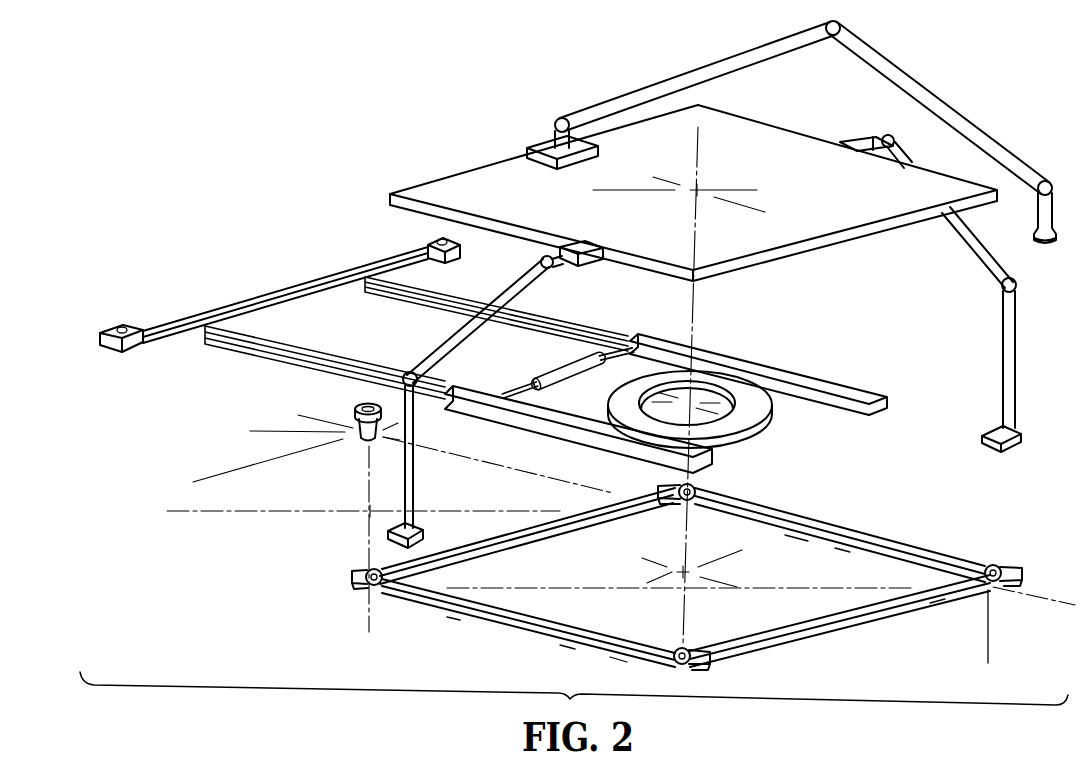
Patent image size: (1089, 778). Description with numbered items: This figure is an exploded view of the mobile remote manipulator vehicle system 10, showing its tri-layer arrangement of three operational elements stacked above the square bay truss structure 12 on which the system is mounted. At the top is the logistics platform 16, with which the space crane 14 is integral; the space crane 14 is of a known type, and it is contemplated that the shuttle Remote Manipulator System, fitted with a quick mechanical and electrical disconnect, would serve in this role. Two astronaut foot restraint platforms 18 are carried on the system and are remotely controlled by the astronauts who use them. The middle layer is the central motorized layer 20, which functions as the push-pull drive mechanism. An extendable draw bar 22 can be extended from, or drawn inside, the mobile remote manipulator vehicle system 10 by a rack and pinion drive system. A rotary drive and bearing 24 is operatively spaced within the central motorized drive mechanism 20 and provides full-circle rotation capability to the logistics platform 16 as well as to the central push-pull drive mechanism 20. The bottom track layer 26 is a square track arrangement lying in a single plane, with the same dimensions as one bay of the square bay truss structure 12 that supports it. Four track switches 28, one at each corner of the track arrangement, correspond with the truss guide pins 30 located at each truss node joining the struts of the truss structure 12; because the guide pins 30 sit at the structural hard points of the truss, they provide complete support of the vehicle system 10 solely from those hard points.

The mobile remote manipulator vehicle system 10 is at (328, 163).
The square bay truss structure 12 is at (988, 640).
The space crane 14 is at (690, 68).
The logistics platform 16 is at (483, 178).
The astronaut foot restraint platform 18 is at (508, 296).
The central motorized layer 20 is at (814, 360).
The extendable draw bar 22 is at (302, 288).
The rotary drive and bearing 24 is at (770, 428).
The bottom track layer 26 is at (855, 533).
The track switch 28 is at (697, 488).
The truss guide pin 30 is at (357, 406).